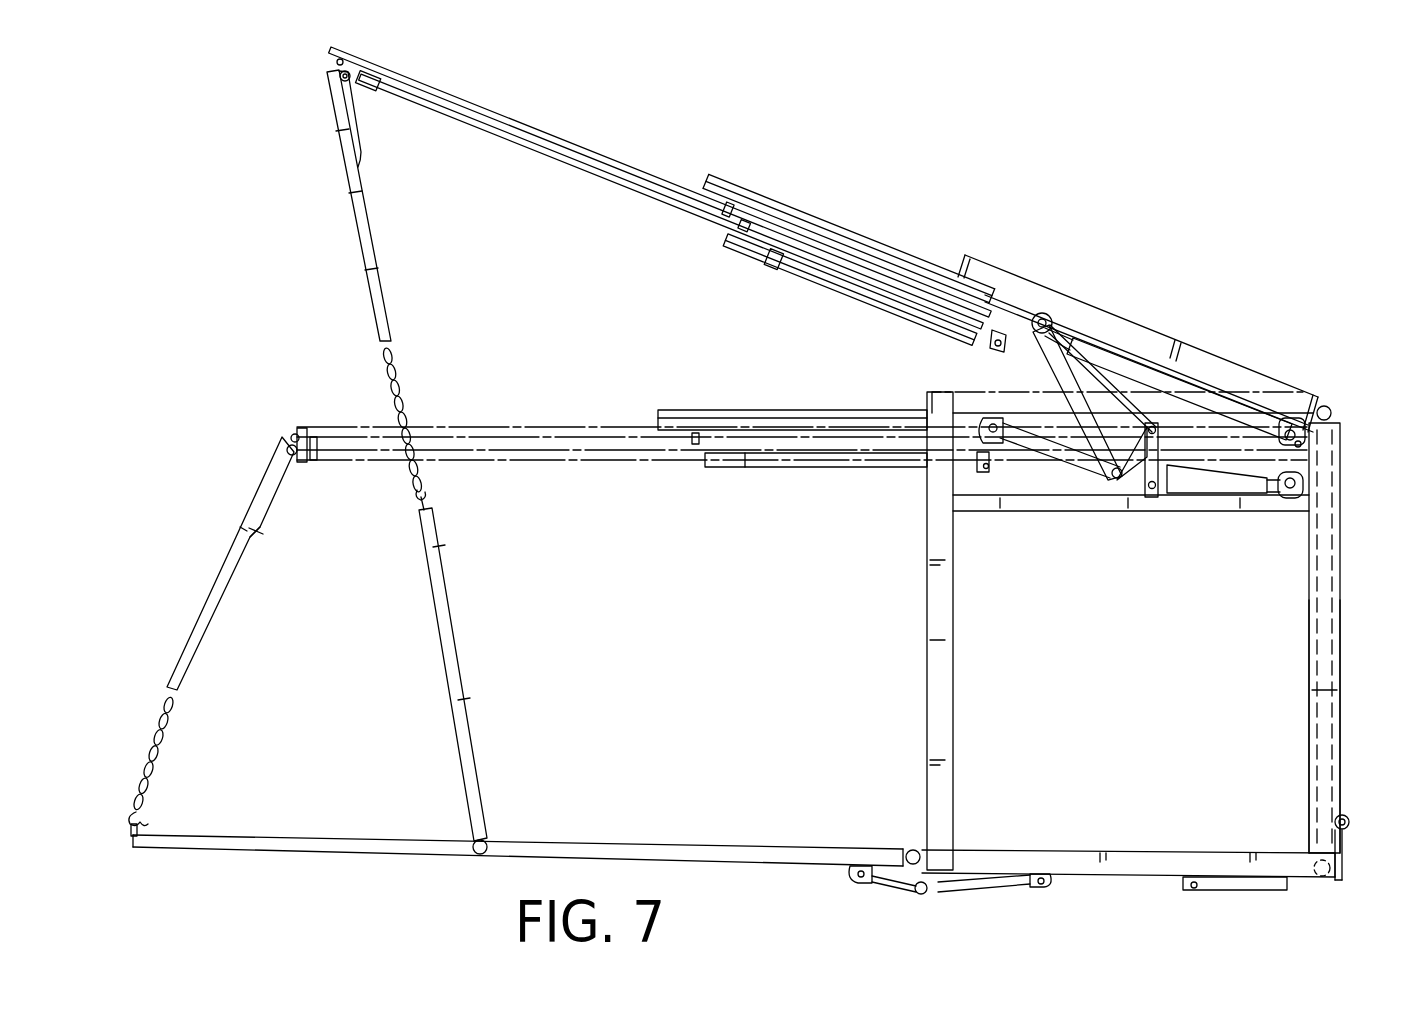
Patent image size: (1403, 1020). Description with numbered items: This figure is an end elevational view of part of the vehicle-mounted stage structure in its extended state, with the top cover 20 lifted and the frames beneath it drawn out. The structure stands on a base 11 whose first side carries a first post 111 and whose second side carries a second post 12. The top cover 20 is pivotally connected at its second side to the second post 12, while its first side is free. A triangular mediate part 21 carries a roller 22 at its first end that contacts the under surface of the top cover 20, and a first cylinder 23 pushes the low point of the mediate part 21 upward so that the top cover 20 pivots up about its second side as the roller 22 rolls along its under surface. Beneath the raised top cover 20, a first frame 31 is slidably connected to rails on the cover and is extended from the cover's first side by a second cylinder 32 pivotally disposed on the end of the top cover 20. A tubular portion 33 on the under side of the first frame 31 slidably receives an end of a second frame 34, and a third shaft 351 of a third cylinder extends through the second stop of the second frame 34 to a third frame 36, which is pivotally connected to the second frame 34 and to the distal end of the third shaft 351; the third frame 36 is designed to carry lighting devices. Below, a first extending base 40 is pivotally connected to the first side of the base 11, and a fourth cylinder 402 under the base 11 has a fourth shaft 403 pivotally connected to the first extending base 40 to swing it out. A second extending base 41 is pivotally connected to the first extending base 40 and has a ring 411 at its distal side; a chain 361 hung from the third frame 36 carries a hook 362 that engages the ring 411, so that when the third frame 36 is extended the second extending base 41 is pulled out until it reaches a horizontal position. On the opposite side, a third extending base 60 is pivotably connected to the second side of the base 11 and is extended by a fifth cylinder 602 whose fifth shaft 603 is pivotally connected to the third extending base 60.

The base 11 is at (1223, 872).
The second post 12 is at (1308, 710).
The top cover 20 is at (1217, 360).
The mediate part 21 is at (1060, 367).
The roller 22 is at (1037, 313).
The first cylinder 23 is at (1265, 483).
The first frame 31 is at (870, 247).
The second cylinder 32 is at (1277, 403).
The tubular portion 33 is at (812, 257).
The second frame 34 is at (615, 169).
The third shaft 351 is at (627, 204).
The third frame 36 is at (353, 192).
The chain 361 is at (405, 405).
The hook 362 is at (425, 490).
The first extending base 40 is at (695, 840).
The second extending base 41 is at (463, 703).
The ring 411 is at (420, 500).
The fourth cylinder 402 is at (997, 885).
The fourth shaft 403 is at (887, 883).
The third extending base 60 is at (1333, 583).
The first post 111 is at (950, 738).
The fifth cylinder 602 is at (1270, 887).
The fifth shaft 603 is at (1343, 850).